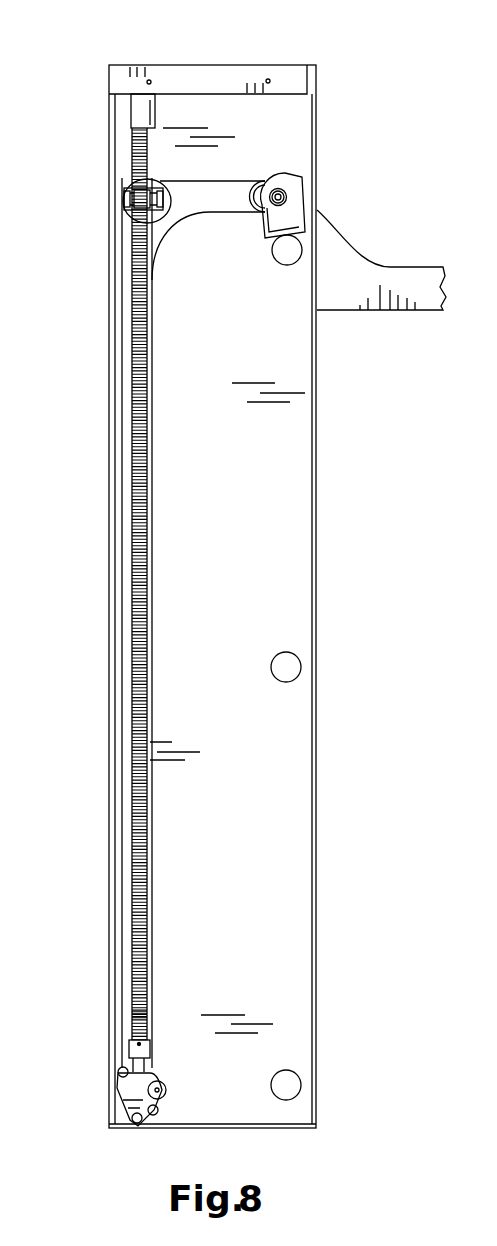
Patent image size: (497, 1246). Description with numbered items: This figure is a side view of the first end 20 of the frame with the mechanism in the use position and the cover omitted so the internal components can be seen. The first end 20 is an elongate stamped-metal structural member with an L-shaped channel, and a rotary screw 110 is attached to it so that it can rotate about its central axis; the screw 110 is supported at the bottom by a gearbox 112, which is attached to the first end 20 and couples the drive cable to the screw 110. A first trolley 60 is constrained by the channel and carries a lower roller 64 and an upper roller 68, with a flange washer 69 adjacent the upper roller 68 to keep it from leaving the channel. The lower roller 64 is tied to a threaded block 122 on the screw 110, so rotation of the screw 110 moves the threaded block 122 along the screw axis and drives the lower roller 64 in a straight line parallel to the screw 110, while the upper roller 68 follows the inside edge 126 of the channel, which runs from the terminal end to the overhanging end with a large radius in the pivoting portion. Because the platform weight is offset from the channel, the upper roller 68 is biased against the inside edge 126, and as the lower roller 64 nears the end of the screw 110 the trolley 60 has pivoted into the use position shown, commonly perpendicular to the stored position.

The first end 20 is at (317, 96).
The first trolley 60 is at (412, 278).
The lower roller 64 is at (128, 183).
The upper roller 68 is at (263, 181).
The flange washer 69 is at (296, 198).
The rotary screw 110 is at (137, 785).
The gearbox 112 is at (125, 1090).
The threaded block 122 is at (142, 199).
The inside edge 126 is at (168, 218).